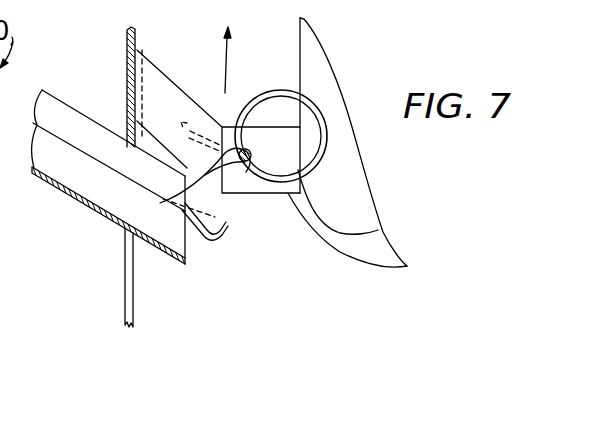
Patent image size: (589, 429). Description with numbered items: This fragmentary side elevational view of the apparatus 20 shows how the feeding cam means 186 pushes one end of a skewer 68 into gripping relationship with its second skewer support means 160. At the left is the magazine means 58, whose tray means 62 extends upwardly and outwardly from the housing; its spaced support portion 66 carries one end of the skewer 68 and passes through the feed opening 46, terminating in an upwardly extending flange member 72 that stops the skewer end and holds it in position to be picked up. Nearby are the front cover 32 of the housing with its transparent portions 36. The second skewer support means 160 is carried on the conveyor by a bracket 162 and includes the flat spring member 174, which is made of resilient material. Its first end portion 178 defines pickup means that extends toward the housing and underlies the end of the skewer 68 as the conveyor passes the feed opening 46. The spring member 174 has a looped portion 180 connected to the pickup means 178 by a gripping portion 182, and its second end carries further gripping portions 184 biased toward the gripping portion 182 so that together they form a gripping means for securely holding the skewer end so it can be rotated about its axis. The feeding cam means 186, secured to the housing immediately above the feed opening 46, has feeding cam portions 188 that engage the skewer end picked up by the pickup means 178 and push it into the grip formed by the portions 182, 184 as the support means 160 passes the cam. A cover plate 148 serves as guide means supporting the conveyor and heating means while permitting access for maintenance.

The apparatus 20 is at (119, 60).
The feed opening 46 is at (116, 293).
The support portion 66 is at (60, 130).
The magazine means 58 is at (85, 227).
The tray means 62 is at (65, 201).
The first end portion 178 is at (205, 120).
The feeding cam means 186 is at (162, 92).
The gripping portion 182 is at (261, 193).
The looped portion 180 is at (306, 102).
The flat spring member 174 is at (277, 80).
The further gripping portions 184 is at (251, 154).
The skewer 68 is at (165, 199).
The flange member 72 is at (223, 232).
The feeding cam portions 188 is at (226, 198).
The cover plate 148 is at (363, 262).
The bracket 162 is at (377, 229).
The second skewer support means 160 is at (315, 186).
The front cover 32 is at (2, 232).
The transparent portions 36 is at (3, 407).